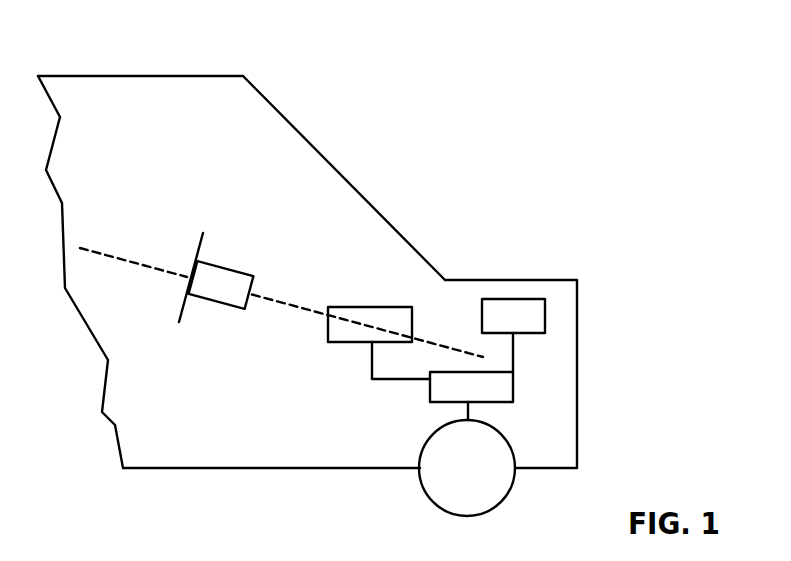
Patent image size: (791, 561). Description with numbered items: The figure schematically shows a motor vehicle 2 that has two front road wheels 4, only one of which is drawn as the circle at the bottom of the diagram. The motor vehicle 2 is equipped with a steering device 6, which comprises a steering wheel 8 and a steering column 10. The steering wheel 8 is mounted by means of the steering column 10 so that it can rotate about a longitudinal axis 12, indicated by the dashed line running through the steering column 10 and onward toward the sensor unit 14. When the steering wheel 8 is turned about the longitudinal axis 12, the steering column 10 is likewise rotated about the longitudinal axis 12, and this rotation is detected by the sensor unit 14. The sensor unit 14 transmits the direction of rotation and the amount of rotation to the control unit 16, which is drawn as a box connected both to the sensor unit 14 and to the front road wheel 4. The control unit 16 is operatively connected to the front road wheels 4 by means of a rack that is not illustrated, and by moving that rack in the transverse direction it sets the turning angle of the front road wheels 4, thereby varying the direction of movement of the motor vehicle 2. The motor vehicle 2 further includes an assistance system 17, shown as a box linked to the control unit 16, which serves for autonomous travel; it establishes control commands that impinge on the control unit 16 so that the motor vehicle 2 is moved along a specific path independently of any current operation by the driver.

The motor vehicle 2 is at (427, 121).
The front road wheel 4 is at (477, 479).
The steering device 6 is at (284, 221).
The steering wheel 8 is at (198, 253).
The steering column 10 is at (224, 267).
The longitudinal axis 12 is at (131, 260).
The sensor unit 14 is at (371, 307).
The control unit 16 is at (513, 388).
The assistance system 17 is at (513, 299).